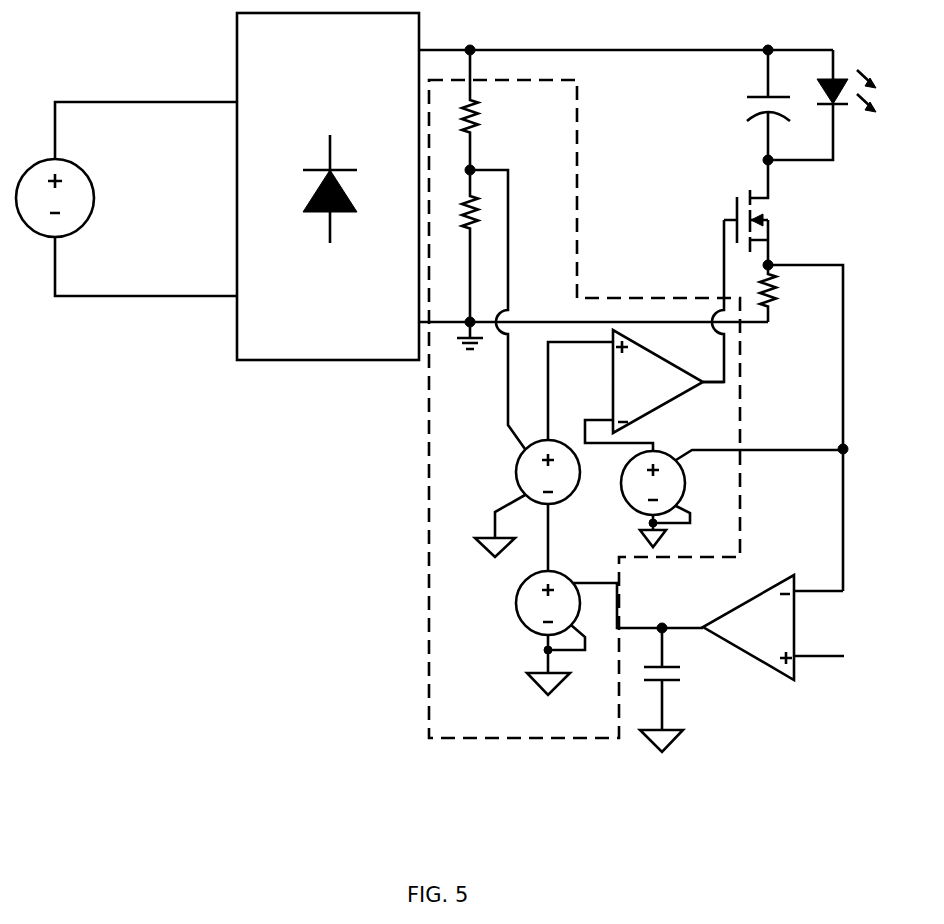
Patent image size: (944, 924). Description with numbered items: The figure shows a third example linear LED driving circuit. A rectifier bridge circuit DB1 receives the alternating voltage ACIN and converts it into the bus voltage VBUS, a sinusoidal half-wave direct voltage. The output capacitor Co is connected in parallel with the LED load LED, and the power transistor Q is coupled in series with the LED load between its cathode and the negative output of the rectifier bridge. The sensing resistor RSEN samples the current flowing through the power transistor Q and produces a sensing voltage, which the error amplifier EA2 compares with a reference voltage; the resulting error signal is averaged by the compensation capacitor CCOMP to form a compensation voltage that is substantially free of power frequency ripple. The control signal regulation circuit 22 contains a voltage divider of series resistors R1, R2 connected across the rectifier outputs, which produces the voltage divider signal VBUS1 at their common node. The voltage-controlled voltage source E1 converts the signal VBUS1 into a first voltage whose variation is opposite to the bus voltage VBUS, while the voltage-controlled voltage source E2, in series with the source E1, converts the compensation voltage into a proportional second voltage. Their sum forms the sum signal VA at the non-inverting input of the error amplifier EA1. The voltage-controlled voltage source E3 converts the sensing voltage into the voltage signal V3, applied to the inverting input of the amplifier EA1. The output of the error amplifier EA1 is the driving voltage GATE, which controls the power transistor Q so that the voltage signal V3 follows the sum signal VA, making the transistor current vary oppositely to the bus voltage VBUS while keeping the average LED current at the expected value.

The control signal regulation circuit 22 is at (584, 409).
The alternating voltage ACIN is at (126, 199).
The rectifier bridge circuit DB1 is at (328, 205).
The bus voltage VBUS is at (626, 34).
The voltage divider signal VBUS1 is at (509, 297).
The resistor R1 is at (455, 110).
The resistor R2 is at (458, 259).
The output capacitor Co is at (755, 107).
The LED load LED is at (822, 105).
The power transistor Q is at (760, 215).
The sensing resistor RSEN is at (804, 428).
The driving voltage GATE is at (695, 301).
The error amplifier EA1 is at (668, 381).
The error amplifier EA2 is at (781, 624).
The voltage-controlled voltage source E1 is at (544, 505).
The voltage-controlled voltage source E2 is at (594, 617).
The voltage-controlled voltage source E3 is at (732, 498).
The sum signal VA is at (564, 387).
The voltage signal V3 is at (615, 422).
The compensation capacitor CCOMP is at (688, 677).